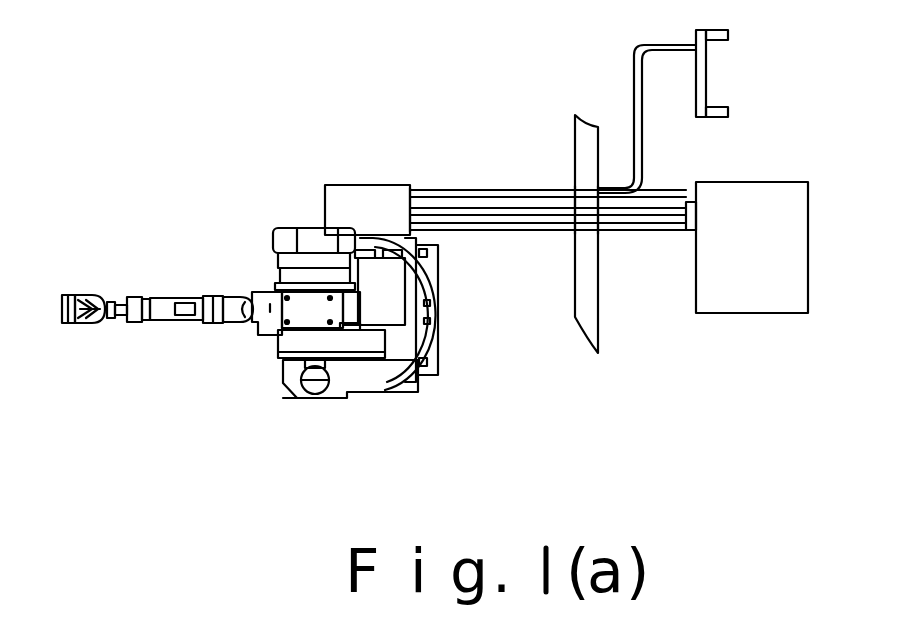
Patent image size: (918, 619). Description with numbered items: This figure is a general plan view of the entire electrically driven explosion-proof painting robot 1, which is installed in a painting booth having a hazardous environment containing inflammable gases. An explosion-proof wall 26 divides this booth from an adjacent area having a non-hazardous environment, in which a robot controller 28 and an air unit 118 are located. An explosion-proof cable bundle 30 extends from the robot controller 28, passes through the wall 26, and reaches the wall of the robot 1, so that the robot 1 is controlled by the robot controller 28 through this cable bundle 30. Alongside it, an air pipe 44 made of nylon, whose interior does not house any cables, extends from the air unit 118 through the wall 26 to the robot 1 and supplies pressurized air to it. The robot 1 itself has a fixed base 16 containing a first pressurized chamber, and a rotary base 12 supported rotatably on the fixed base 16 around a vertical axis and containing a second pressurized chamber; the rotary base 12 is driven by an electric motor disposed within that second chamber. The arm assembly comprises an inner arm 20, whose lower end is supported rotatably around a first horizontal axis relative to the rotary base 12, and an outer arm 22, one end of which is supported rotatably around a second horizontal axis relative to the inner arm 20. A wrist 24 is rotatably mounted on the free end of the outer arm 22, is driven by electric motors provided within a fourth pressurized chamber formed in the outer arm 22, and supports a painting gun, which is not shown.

The electrically driven explosion-proof painting robot 1 is at (357, 490).
The rotary base 12 is at (400, 385).
The fixed base 16 is at (440, 270).
The inner arm 20 is at (300, 248).
The outer arm 22 is at (175, 298).
The wrist 24 is at (85, 295).
The explosion-proof wall 26 is at (583, 143).
The robot controller 28 is at (750, 315).
The explosion-proof cable bundle 30 is at (503, 207).
The air pipe 44 is at (456, 188).
The air unit 118 is at (707, 70).